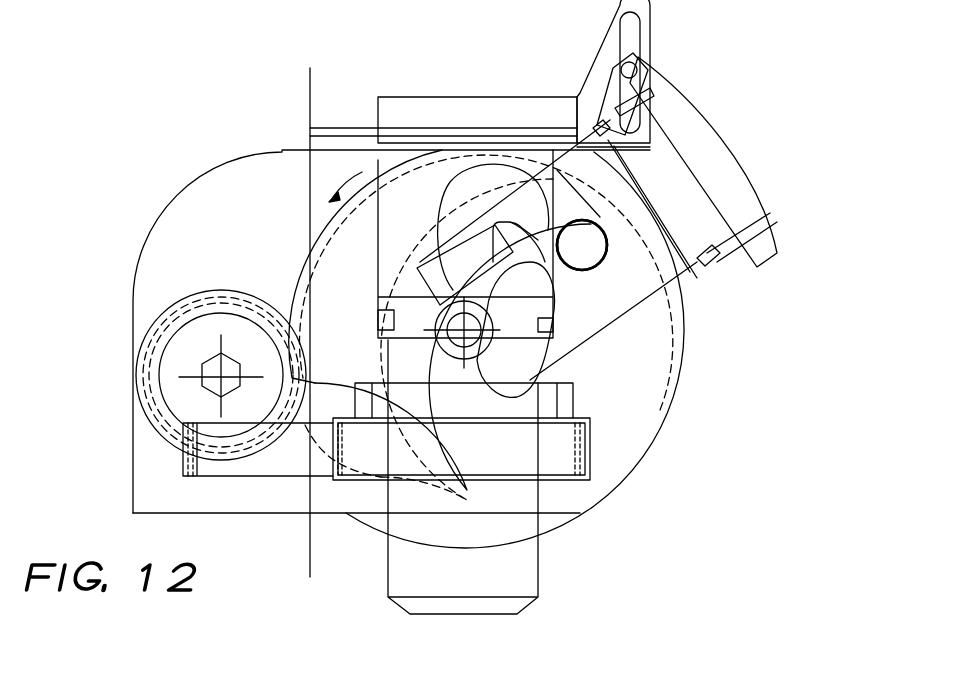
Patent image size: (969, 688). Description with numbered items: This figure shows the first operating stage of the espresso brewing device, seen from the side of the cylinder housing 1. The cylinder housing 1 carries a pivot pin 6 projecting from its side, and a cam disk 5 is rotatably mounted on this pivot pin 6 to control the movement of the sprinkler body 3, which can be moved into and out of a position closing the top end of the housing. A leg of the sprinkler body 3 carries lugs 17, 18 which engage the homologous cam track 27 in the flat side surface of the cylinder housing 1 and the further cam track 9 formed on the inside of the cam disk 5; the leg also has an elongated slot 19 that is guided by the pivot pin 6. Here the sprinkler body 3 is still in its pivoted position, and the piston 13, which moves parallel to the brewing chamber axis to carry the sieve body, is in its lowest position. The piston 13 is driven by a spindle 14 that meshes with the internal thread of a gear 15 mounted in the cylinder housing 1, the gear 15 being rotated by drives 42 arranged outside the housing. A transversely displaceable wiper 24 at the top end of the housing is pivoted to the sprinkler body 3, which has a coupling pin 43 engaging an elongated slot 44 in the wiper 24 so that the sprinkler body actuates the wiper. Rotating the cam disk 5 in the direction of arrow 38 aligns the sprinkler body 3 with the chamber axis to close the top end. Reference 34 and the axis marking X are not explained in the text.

The cylinder housing 1 is at (312, 167).
The sprinkler body 3 is at (713, 143).
The cam disk 5 is at (318, 232).
The pivot pin 6 is at (615, 345).
The further cam track 9 is at (597, 290).
The piston 13 is at (325, 295).
The spindle 14 is at (528, 582).
The gear 15 is at (570, 453).
The lug 17 is at (607, 255).
The lug 18 is at (582, 245).
The elongated slot 19 is at (528, 265).
The wiper 24 is at (458, 107).
The homologous cam track 27 is at (460, 193).
The connector block 34 is at (717, 258).
The arrow 38 is at (340, 180).
The drive 42 is at (187, 473).
The coupling pin 43 is at (635, 72).
The elongated slot 44 is at (650, 117).
The axis X is at (150, 390).